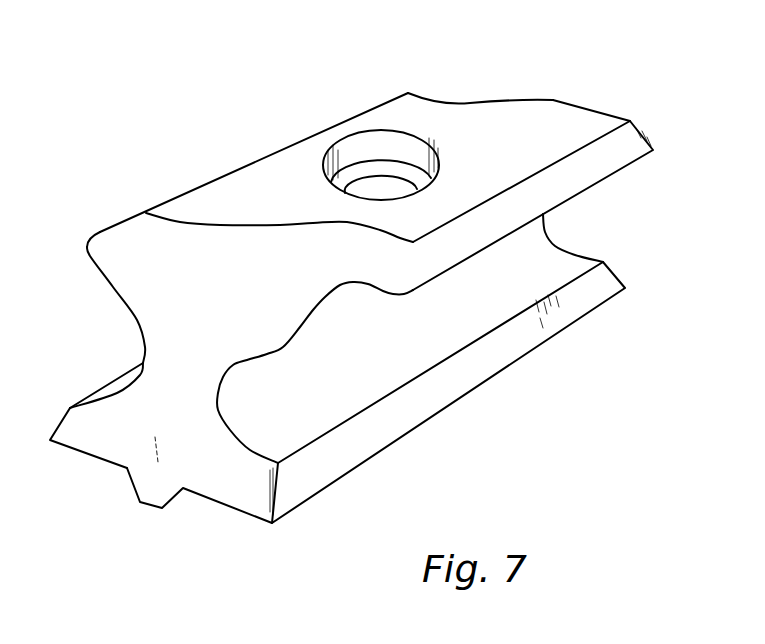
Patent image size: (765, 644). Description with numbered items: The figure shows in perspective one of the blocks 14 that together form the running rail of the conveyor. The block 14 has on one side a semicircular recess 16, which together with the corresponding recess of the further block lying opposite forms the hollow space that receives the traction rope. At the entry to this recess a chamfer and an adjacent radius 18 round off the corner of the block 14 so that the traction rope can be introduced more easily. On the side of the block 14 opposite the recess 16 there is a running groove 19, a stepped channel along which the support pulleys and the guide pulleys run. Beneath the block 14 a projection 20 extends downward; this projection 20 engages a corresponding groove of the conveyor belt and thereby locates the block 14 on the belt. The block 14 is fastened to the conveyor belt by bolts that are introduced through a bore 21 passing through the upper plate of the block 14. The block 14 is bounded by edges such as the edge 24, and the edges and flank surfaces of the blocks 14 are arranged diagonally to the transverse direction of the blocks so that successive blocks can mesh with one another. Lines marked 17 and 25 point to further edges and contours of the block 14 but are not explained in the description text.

The block 14 is at (242, 307).
The recess 16 is at (140, 337).
The upper edge 17 is at (120, 224).
The radius 18 is at (87, 247).
The running groove 19 is at (500, 297).
The projection 20 is at (157, 493).
The bore 21 is at (382, 188).
The edge 24 is at (223, 224).
The recess 25 is at (522, 103).